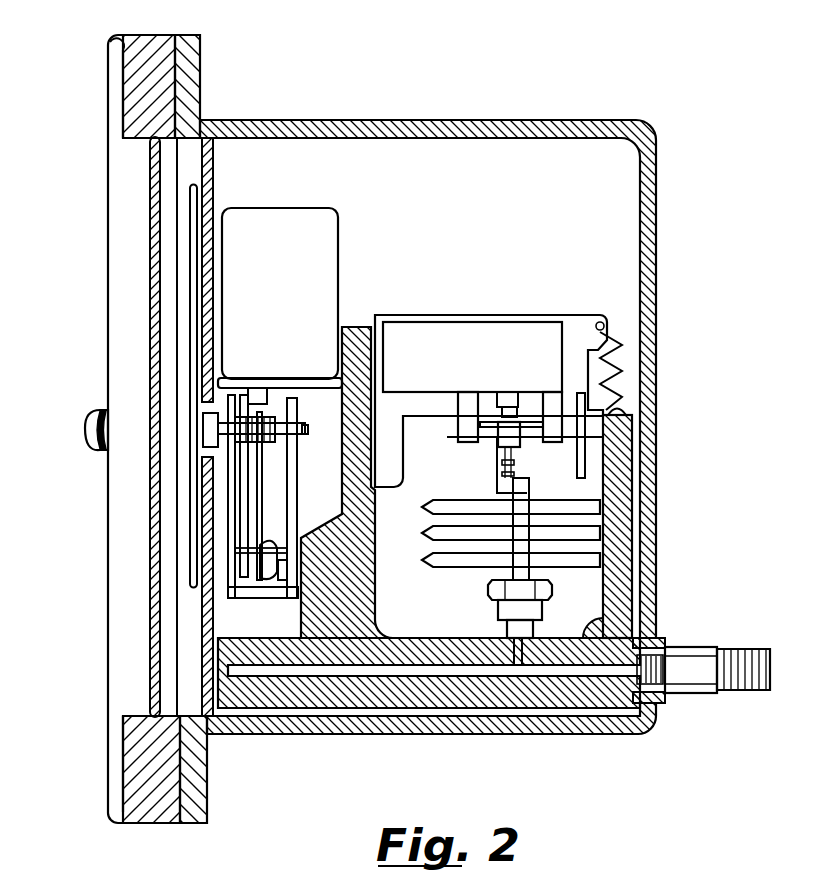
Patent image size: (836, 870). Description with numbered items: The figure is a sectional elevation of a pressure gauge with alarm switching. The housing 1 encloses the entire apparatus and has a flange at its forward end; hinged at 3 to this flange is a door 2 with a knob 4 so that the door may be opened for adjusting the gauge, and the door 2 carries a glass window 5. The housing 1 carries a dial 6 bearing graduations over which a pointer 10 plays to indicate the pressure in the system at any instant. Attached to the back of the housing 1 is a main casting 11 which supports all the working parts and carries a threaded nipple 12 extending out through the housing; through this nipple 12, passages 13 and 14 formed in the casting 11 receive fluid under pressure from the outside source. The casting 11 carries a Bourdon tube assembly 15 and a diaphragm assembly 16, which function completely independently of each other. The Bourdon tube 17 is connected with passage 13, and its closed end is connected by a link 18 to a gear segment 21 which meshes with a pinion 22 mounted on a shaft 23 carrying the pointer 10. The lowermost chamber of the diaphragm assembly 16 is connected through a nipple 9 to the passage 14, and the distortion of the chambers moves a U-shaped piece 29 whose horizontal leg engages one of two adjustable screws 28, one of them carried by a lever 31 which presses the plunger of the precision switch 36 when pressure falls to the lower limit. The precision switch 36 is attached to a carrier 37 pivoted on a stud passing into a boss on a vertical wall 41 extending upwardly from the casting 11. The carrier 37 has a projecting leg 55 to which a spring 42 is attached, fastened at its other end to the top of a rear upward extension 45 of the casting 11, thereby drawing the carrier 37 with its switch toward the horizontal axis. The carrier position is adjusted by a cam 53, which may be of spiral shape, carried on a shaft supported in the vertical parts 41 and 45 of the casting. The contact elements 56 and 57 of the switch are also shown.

The housing 1 is at (647, 216).
The door 2 is at (140, 48).
The hinge 3 is at (220, 68).
The knob 4 is at (88, 436).
The glass window 5 is at (150, 206).
The dial 6 is at (210, 180).
The nipple 9 is at (511, 631).
The pointer 10 is at (199, 202).
The main casting 11 is at (400, 701).
The threaded nipple 12 is at (742, 693).
The passage 13 is at (585, 673).
The passage 14 is at (524, 646).
The Bourdon tube assembly 15 is at (303, 214).
The diaphragm assembly 16 is at (430, 541).
The Bourdon tube 17 is at (286, 288).
The link 18 is at (245, 492).
The gear segment 21 is at (263, 512).
The pinion 22 is at (262, 421).
The shaft 23 is at (305, 434).
The adjustable screw 28 is at (516, 465).
The U-shaped piece 29 is at (530, 494).
The lever 31 is at (505, 438).
The precision switch 36 is at (486, 371).
The carrier 37 is at (425, 319).
The vertical wall 41 is at (348, 328).
The spring 42 is at (622, 363).
The rear upward extension 45 is at (622, 469).
The cam 53 is at (630, 405).
The projecting leg 55 is at (570, 336).
The contact 56 is at (468, 413).
The contact screw 57 is at (490, 426).